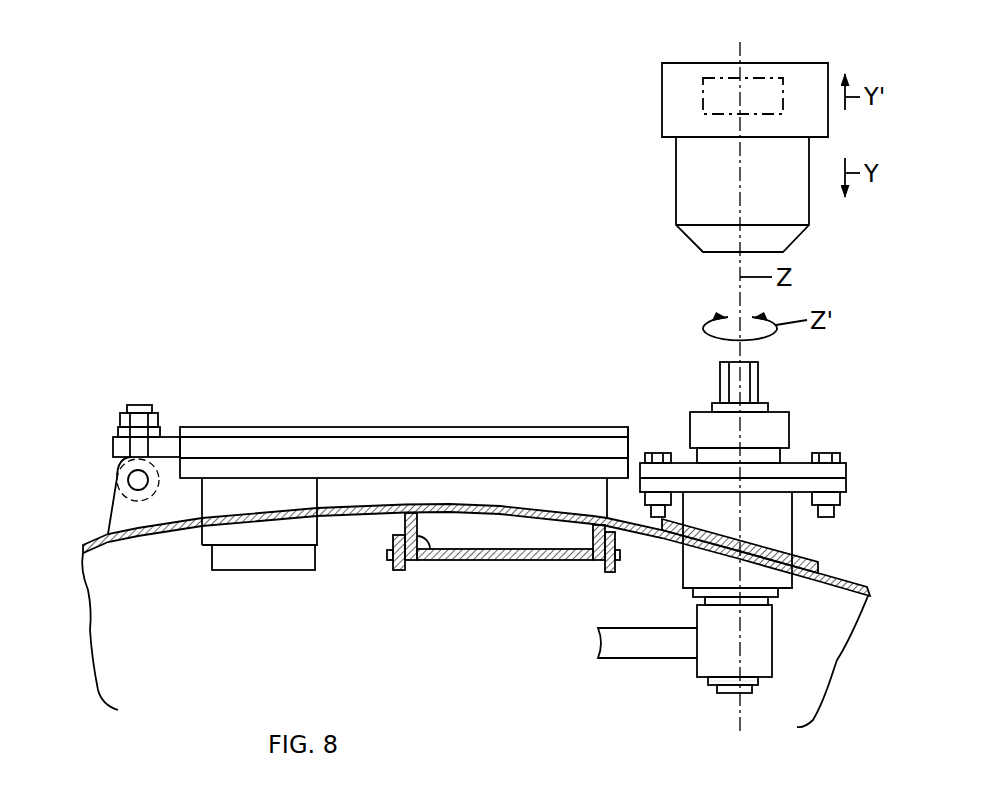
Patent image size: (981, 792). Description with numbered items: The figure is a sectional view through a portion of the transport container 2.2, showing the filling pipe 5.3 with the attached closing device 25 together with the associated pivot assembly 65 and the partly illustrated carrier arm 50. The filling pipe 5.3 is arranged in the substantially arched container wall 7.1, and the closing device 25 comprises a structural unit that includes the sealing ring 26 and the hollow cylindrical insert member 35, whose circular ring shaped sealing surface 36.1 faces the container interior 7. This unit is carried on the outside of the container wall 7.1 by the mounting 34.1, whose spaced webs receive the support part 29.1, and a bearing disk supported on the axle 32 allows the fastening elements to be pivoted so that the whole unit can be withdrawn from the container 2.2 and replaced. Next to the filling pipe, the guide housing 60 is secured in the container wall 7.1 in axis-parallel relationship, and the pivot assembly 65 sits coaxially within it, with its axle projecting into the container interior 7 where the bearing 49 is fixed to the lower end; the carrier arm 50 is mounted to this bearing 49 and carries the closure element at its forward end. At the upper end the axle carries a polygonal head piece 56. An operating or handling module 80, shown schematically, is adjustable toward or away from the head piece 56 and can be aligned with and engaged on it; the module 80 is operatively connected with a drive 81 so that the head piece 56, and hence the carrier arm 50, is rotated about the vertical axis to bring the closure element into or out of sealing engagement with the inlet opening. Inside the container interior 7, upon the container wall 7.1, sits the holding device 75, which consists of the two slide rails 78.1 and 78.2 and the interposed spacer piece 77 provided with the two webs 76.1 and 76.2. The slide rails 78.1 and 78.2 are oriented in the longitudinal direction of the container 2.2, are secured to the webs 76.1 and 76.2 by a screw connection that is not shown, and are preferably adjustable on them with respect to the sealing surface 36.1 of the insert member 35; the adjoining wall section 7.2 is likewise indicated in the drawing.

The transport container 2.2 is at (84, 644).
The filling pipe 5.3 is at (338, 422).
The container interior 7 is at (145, 661).
The container wall 7.1 is at (128, 548).
The straight guide plate section 7.2 is at (838, 578).
The closing device 25 is at (631, 417).
The sealing ring 26 is at (515, 433).
The support part 29.1 is at (115, 447).
The axle 32 is at (136, 479).
The mounting 34.1 is at (107, 513).
The insert member 35 is at (226, 560).
The sealing surface 36.1 is at (290, 573).
The bearing 49 is at (757, 628).
The carrier arm 50 is at (625, 648).
The head piece 56 is at (758, 380).
The guide housing 60 is at (779, 530).
The pivot assembly 65 is at (685, 687).
The holding device 75 is at (488, 569).
The web 76.1 is at (413, 562).
The web 76.2 is at (597, 565).
The spacer piece 77 is at (536, 563).
The slide rail 78.1 is at (393, 562).
The slide rail 78.2 is at (615, 567).
The operating or handling module 80 is at (667, 152).
The drive 81 is at (712, 98).